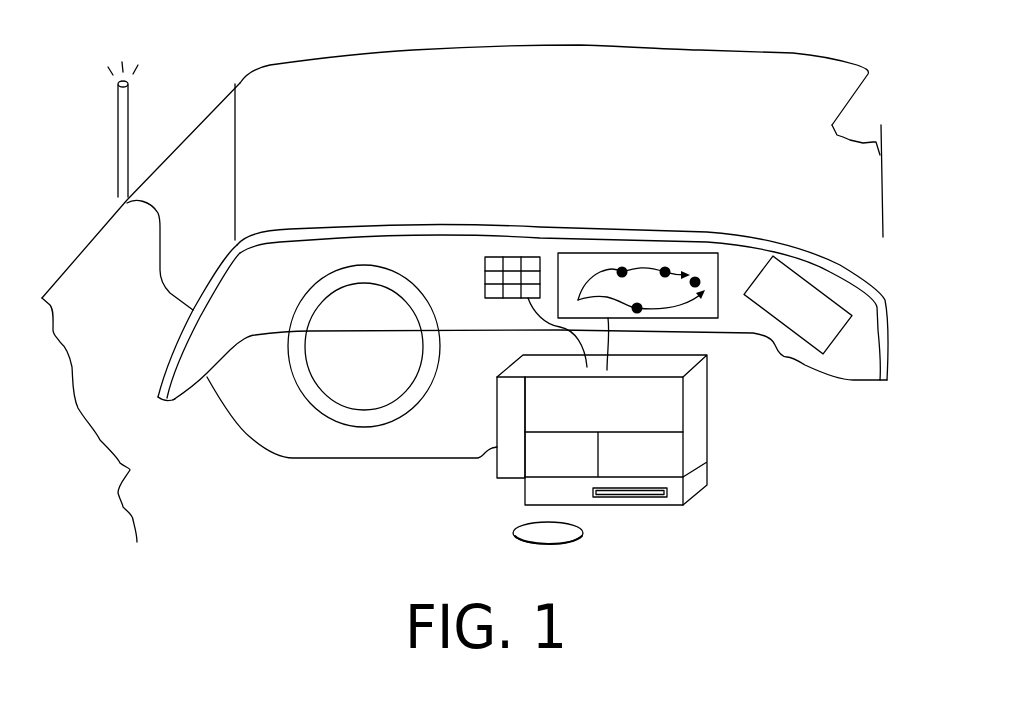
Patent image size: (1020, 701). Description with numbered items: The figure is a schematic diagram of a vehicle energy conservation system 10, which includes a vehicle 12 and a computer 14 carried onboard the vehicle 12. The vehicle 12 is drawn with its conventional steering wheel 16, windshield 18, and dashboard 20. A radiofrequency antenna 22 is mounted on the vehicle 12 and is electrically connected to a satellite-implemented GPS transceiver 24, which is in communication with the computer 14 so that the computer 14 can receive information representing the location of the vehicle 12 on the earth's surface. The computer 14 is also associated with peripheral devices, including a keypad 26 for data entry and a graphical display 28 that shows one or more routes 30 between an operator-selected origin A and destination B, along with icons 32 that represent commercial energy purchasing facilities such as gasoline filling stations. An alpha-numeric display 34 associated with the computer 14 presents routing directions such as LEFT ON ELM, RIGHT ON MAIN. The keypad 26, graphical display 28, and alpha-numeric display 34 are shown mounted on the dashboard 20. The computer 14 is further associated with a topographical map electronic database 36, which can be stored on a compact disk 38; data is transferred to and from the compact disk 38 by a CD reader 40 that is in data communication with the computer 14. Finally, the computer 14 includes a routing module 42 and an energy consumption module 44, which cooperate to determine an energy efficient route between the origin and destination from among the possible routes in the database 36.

The vehicle energy conservation system 10 is at (606, 31).
The vehicle 12 is at (240, 83).
The computer 14 is at (700, 410).
The steering wheel 16 is at (357, 428).
The windshield 18 is at (427, 72).
The dashboard 20 is at (413, 228).
The radiofrequency antenna 22 is at (128, 115).
The GPS transceiver 24 is at (497, 465).
The keypad 26 is at (508, 257).
The graphical display 28 is at (580, 253).
The route 30 is at (650, 267).
The icon 32 is at (622, 266).
The alpha-numeric display 34 is at (788, 267).
The topographical map electronic database 36 is at (572, 530).
The compact disk 38 is at (580, 542).
The CD reader 40 is at (697, 483).
The routing module 42 is at (533, 472).
The energy consumption module 44 is at (677, 457).